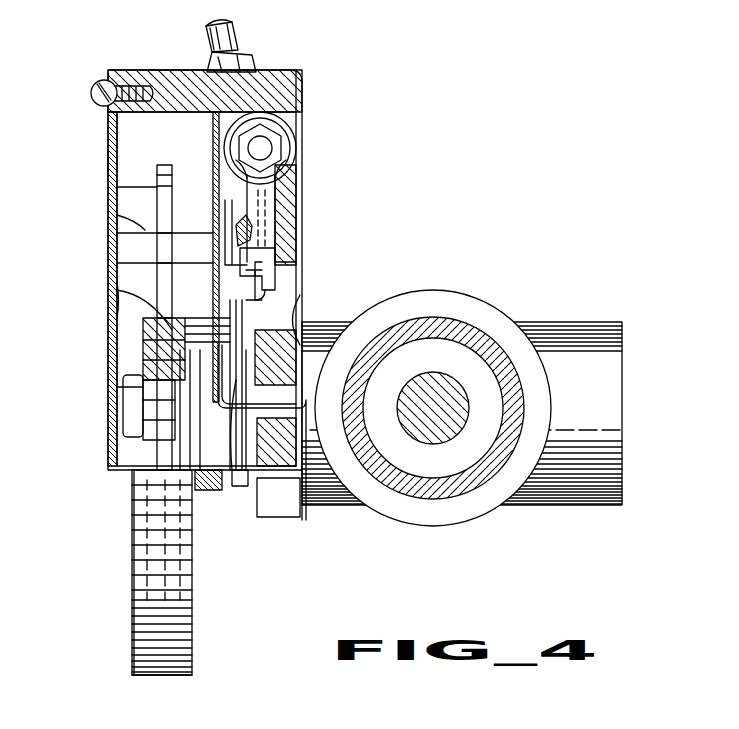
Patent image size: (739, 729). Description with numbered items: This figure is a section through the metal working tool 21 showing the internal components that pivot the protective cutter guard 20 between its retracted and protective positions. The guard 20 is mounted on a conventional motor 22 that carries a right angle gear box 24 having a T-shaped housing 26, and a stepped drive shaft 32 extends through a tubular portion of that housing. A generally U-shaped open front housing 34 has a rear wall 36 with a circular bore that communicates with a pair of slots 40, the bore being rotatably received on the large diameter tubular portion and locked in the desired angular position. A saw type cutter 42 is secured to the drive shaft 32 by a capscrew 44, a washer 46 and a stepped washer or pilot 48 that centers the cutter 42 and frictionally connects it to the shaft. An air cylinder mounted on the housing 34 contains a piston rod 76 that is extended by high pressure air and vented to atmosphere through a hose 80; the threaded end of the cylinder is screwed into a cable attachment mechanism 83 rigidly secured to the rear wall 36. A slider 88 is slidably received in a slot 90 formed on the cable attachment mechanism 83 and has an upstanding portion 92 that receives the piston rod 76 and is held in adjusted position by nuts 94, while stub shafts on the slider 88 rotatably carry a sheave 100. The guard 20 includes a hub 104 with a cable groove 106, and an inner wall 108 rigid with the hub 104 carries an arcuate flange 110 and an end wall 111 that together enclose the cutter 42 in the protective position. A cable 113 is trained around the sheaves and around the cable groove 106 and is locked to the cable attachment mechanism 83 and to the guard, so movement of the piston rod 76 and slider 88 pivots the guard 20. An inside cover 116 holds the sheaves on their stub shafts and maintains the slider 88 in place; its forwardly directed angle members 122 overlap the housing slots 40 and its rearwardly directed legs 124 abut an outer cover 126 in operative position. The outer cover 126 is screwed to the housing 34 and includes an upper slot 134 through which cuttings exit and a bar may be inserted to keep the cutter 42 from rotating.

The protective cutter guard 20 is at (128, 628).
The metal working tool 21 is at (476, 272).
The motor 22 is at (482, 310).
The right angle gear box 24 is at (612, 322).
The T-shaped housing 26 is at (595, 388).
The stepped drive shaft 32 is at (117, 388).
The U-shaped open front housing 34 is at (316, 79).
The rear wall 36 is at (290, 188).
The slots 40 is at (306, 406).
The saw type cutter 42 is at (157, 186).
The capscrew 44 is at (128, 423).
The washer 46 is at (143, 340).
The stepped washer or pilot 48 is at (117, 290).
The piston rod 76 is at (265, 148).
The hose 80 is at (232, 42).
The cable attachment mechanism 83 is at (288, 116).
The slider 88 is at (262, 231).
The slot 90 is at (258, 277).
The upstanding portion 92 is at (272, 209).
The nuts 94 is at (283, 162).
The sheave 100 is at (258, 257).
The hub 104 is at (200, 492).
The cable groove 106 is at (240, 496).
The inner wall 108 is at (192, 583).
The arcuate flange 110 is at (132, 578).
The end wall 111 is at (165, 676).
The cable 113 is at (250, 343).
The inside cover 116 is at (213, 130).
The angle members 122 is at (268, 392).
The legs 124 is at (117, 213).
The outer cover 126 is at (108, 160).
The upper slot 134 is at (110, 112).